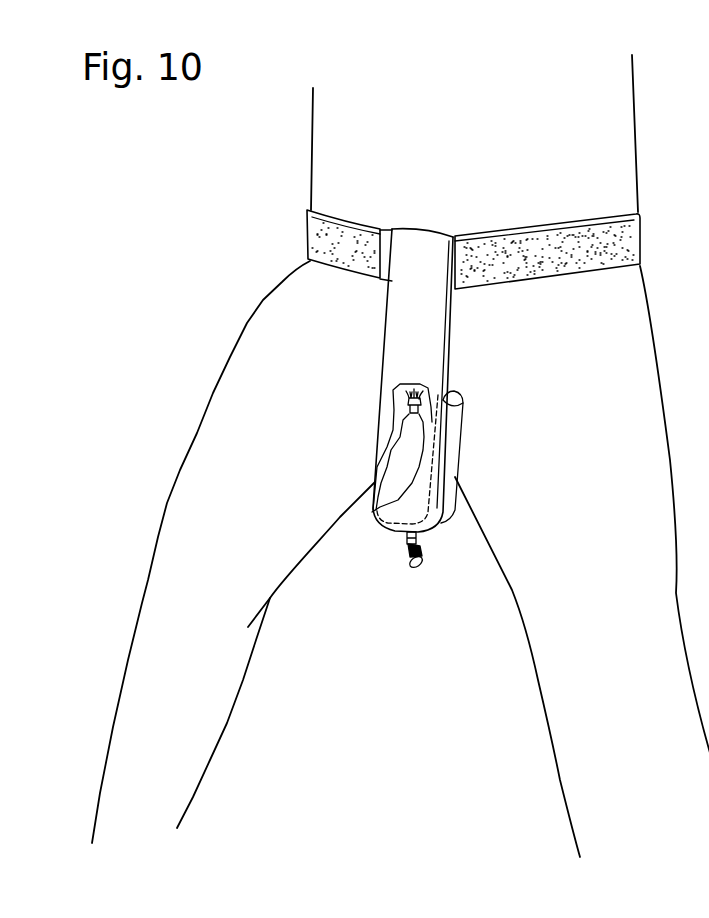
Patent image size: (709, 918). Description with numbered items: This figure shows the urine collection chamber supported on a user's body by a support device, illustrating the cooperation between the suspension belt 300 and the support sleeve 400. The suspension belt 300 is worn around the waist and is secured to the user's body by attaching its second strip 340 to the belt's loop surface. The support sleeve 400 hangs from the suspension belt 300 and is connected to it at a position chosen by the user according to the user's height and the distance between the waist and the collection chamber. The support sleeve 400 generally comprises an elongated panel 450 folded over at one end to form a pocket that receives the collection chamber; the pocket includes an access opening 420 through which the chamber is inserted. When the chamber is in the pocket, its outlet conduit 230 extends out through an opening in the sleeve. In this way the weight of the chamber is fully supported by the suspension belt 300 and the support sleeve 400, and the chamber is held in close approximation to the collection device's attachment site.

The suspension belt 300 is at (548, 184).
The second strip 340 is at (320, 242).
The support sleeve 400 is at (468, 439).
The access opening 420 is at (460, 397).
The elongated panel 450 is at (417, 505).
The outlet conduit 230 is at (405, 583).